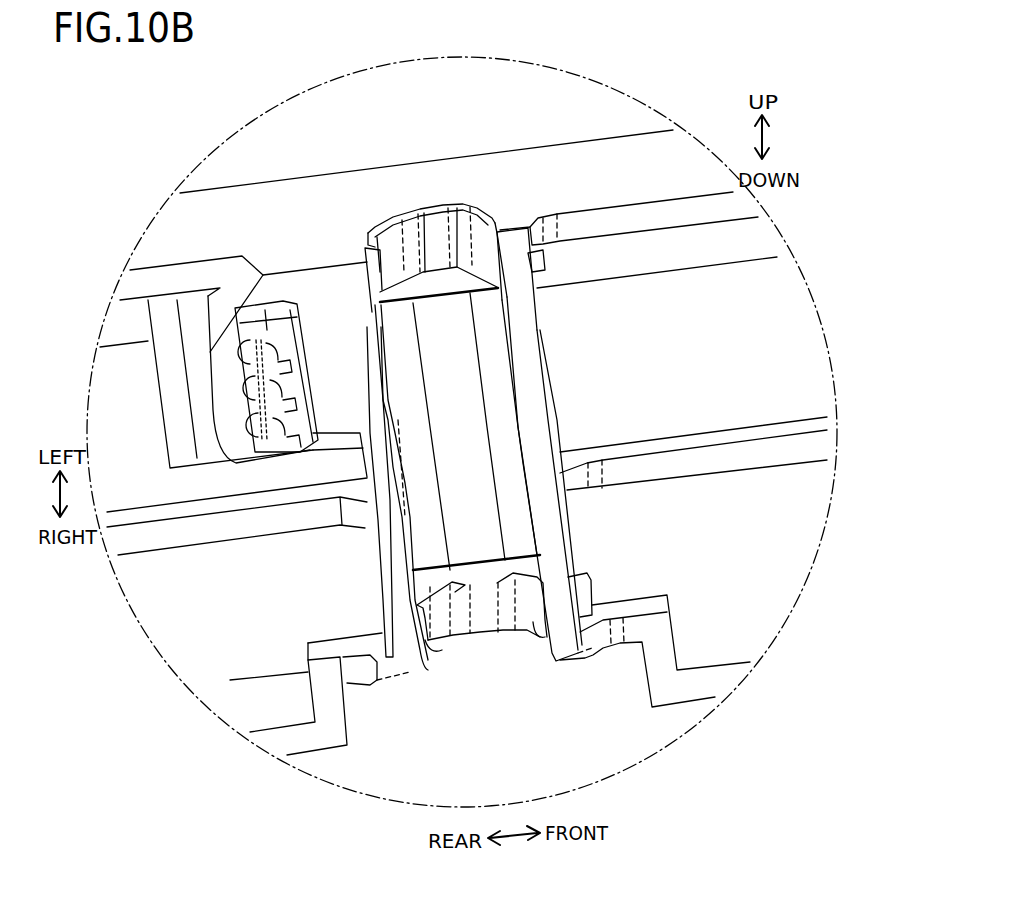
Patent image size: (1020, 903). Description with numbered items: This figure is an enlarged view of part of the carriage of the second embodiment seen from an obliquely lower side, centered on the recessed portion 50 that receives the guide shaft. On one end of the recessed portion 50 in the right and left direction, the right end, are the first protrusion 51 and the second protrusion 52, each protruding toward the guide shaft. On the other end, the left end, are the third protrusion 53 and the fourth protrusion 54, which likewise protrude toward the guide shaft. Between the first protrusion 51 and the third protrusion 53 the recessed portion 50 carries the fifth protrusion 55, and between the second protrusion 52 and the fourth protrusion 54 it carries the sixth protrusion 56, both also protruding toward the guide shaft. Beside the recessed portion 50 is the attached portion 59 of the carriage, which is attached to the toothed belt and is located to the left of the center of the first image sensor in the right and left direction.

The recessed portion 50 is at (467, 362).
The first protrusion 51 is at (547, 620).
The second protrusion 52 is at (427, 640).
The third protrusion 53 is at (498, 262).
The fourth protrusion 54 is at (383, 272).
The fifth protrusion 55 is at (520, 447).
The sixth protrusion 56 is at (398, 485).
The attached portion 59 is at (296, 362).